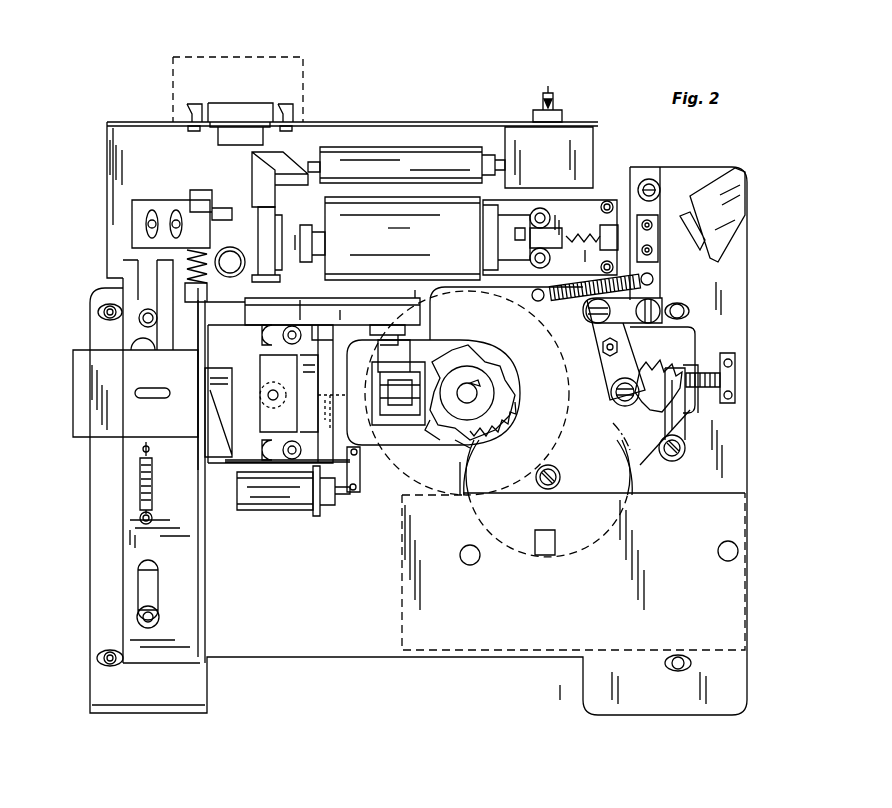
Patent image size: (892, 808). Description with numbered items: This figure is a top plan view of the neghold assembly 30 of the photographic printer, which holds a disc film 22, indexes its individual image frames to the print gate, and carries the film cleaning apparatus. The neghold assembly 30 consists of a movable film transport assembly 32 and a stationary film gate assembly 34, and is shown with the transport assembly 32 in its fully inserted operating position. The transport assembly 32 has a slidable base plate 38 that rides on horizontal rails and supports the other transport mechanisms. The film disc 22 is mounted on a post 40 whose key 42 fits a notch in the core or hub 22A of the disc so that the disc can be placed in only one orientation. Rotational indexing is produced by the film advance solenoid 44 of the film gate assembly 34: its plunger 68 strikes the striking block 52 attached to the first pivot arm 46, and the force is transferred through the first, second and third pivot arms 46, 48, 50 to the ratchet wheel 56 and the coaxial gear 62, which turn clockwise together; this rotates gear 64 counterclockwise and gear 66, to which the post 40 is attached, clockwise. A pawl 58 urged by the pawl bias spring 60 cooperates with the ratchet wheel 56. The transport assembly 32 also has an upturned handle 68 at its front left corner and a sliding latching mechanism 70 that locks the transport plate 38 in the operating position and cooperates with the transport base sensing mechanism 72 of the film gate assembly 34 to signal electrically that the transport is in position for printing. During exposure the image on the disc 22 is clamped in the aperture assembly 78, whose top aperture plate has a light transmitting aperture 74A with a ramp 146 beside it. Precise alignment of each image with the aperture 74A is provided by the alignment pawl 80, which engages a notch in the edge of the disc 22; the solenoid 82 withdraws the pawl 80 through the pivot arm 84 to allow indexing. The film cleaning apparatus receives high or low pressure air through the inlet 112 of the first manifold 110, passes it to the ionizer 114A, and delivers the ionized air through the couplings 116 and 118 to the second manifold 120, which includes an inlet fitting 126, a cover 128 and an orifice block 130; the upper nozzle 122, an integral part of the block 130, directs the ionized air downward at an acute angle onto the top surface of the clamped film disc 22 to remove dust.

The disc film 22 is at (437, 488).
The core or hub of disc 22A is at (455, 375).
The neghold assembly 30 is at (88, 477).
The film transport assembly 32 is at (752, 296).
The film gate assembly 34 is at (355, 122).
The slidable base plate 38 is at (736, 274).
The post 40 is at (482, 393).
The key 42 is at (478, 385).
The film advance solenoid 44 is at (402, 238).
The first pivot arm 46 is at (658, 205).
The second pivot arm 48 is at (622, 310).
The third pivot arm 50 is at (625, 357).
The striking block 52 is at (658, 243).
The ratchet wheel 56 is at (656, 360).
The pawl 58 is at (687, 427).
The pawl bias spring 60 is at (700, 378).
The gear 62 is at (645, 460).
The gear 64 is at (510, 565).
The gear 66 is at (472, 445).
The plunger 68 is at (585, 212).
The sliding latching mechanism 70 is at (126, 552).
The transport base sensing mechanism 72 is at (172, 251).
The light transmitting aperture 74A is at (392, 412).
The aperture assembly 78 is at (221, 462).
The alignment pawl 80 is at (345, 406).
The solenoid 82 is at (282, 510).
The pivot arm 84 is at (368, 478).
The first manifold 110 is at (590, 140).
The inlet 112 is at (558, 106).
The air cylinder 114A is at (405, 150).
The coupling 116 is at (258, 168).
The coupling 118 is at (262, 230).
The second manifold 120 is at (315, 297).
The upper nozzle 122 is at (388, 320).
The inlet fitting 126 is at (252, 278).
The cover 128 is at (245, 300).
The orifice block 130 is at (332, 307).
The ramp 146 is at (399, 377).